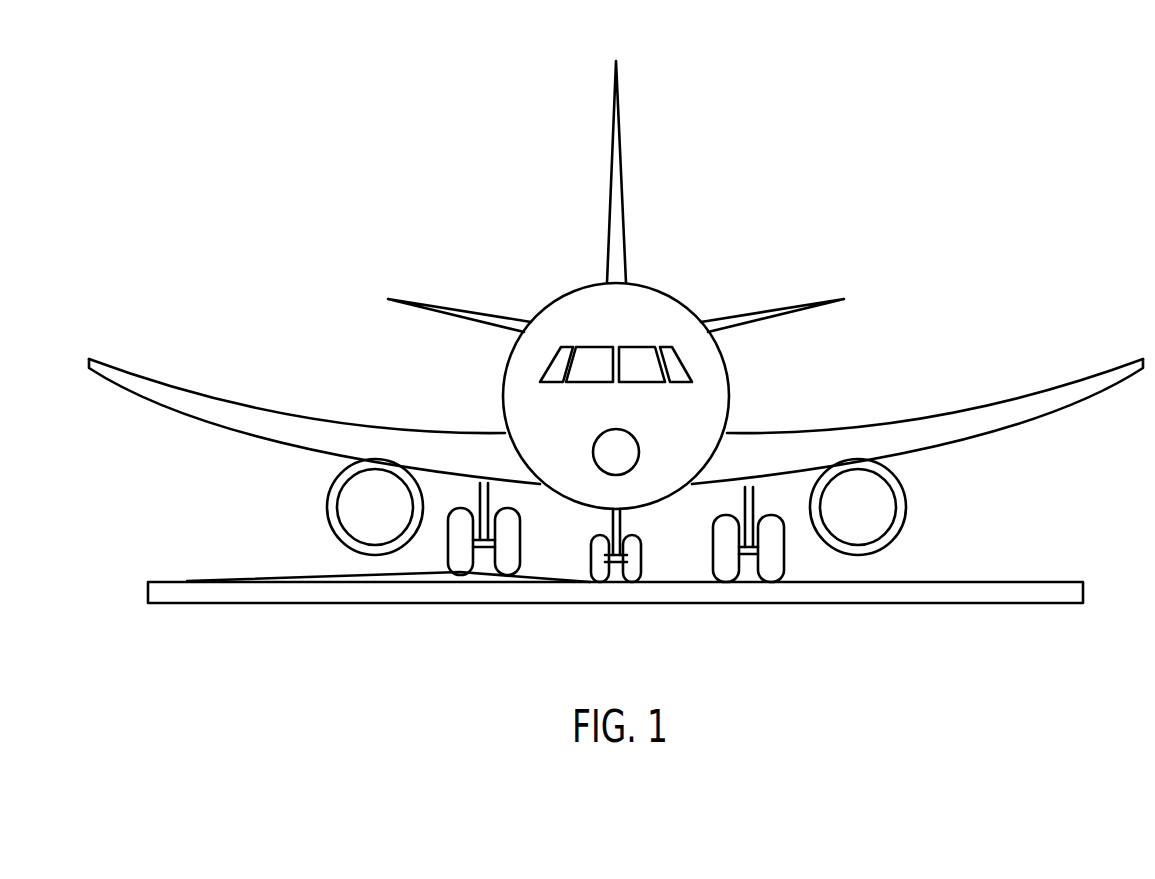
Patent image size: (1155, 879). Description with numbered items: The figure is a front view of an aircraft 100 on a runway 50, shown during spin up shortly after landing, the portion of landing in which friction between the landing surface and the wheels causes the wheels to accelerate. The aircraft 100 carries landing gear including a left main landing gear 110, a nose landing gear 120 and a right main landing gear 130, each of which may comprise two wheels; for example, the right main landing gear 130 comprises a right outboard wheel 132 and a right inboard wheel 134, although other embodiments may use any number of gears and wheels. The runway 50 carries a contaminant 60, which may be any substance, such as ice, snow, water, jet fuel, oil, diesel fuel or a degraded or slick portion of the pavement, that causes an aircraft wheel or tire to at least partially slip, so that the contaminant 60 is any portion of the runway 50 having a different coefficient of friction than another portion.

The runway 50 is at (958, 580).
The contaminant 60 is at (332, 572).
The aircraft 100 is at (533, 205).
The left main landing gear 110 is at (785, 568).
The nose landing gear 120 is at (653, 582).
The right main landing gear 130 is at (478, 574).
The right outboard wheel 132 is at (458, 575).
The right inboard wheel 134 is at (497, 575).